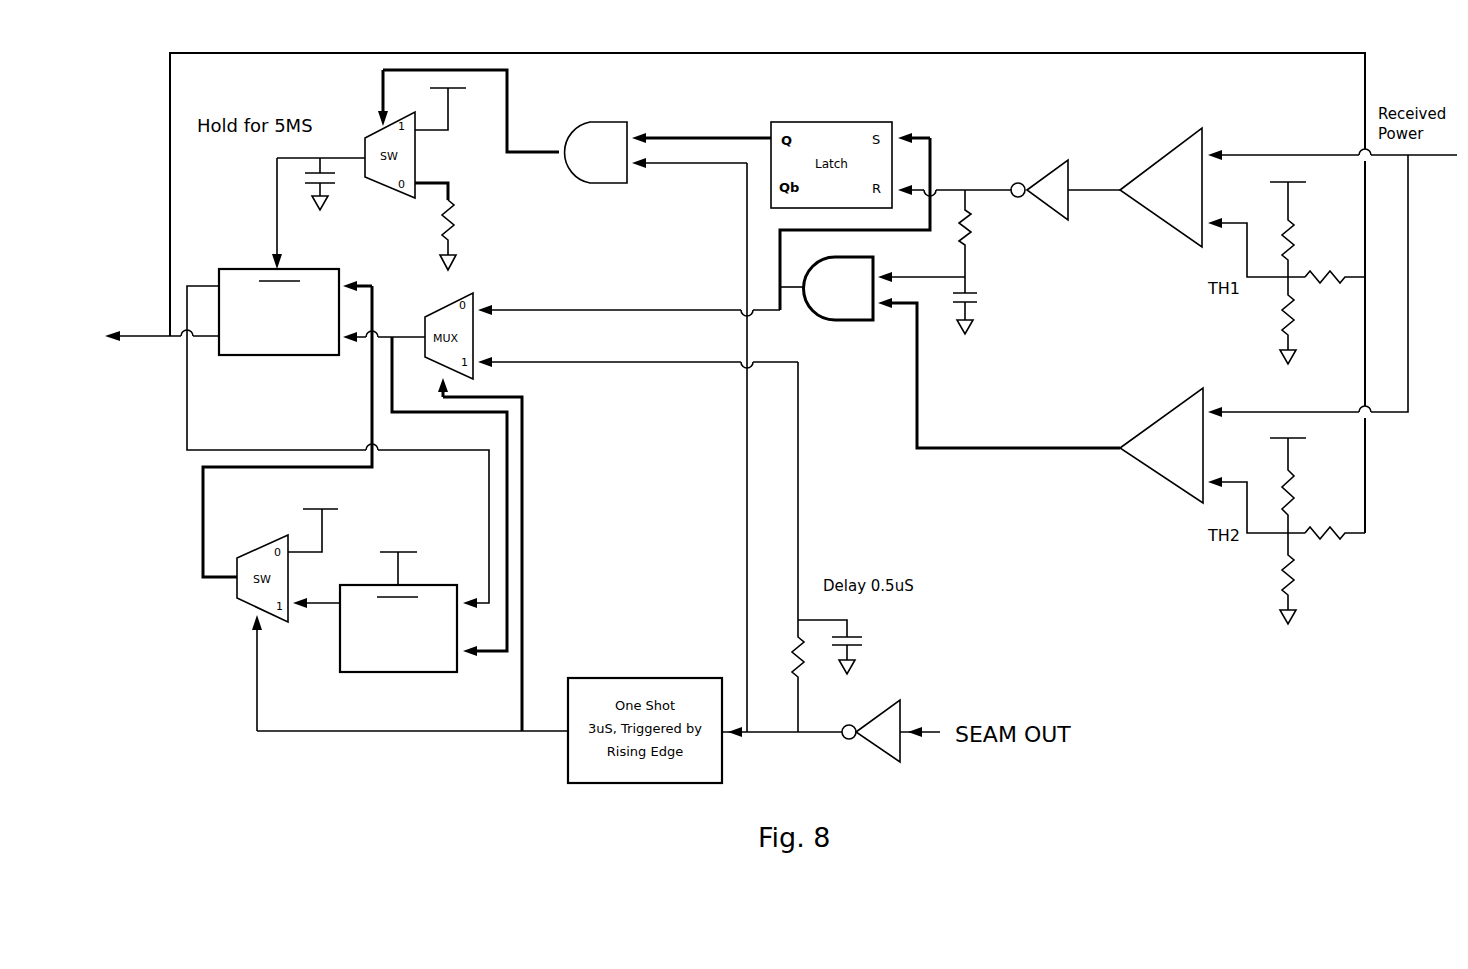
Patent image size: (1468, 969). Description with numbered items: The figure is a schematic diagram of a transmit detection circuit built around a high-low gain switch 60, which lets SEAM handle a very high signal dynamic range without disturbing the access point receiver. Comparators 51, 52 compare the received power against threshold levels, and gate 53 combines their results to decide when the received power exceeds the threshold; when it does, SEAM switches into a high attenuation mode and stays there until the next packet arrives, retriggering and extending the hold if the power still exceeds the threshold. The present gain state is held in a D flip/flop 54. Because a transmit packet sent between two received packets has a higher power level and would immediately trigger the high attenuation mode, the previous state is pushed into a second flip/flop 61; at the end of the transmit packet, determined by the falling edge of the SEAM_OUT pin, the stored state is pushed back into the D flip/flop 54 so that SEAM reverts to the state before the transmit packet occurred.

The high-low gain switch 60 is at (742, 293).
The comparator 51 is at (1161, 201).
The comparator 52 is at (1161, 457).
The AND gate 53 is at (826, 308).
The D flip/flop 54 is at (279, 335).
The flip-flop 61 is at (398, 634).